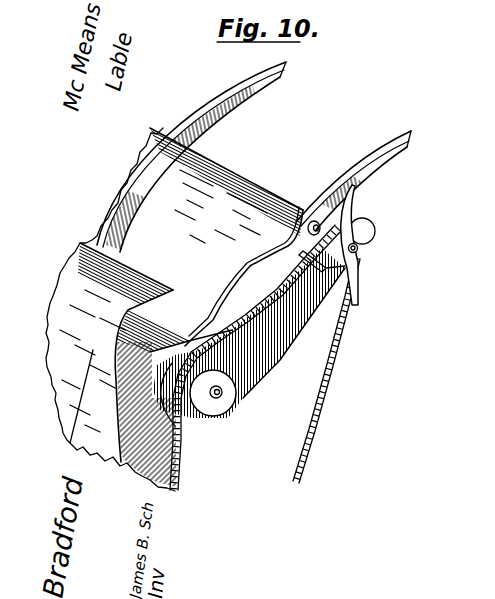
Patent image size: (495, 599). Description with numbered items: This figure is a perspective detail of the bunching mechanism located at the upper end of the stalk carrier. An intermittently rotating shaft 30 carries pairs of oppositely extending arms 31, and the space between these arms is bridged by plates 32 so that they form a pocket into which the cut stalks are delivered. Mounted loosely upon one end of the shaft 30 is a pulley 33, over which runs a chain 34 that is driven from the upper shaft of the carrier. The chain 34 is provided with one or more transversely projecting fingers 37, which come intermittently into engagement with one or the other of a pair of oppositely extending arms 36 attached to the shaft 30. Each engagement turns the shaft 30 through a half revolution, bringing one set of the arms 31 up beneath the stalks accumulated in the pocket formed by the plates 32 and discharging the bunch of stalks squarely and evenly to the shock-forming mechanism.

The intermittently rotating shaft 30 is at (358, 248).
The oppositely extending arms 31 is at (268, 80).
The plates 32 is at (177, 240).
The pulley 33 is at (361, 230).
The chain 34 is at (343, 343).
The oppositely extending arms 36 is at (348, 208).
The transversely projecting fingers 37 is at (343, 275).